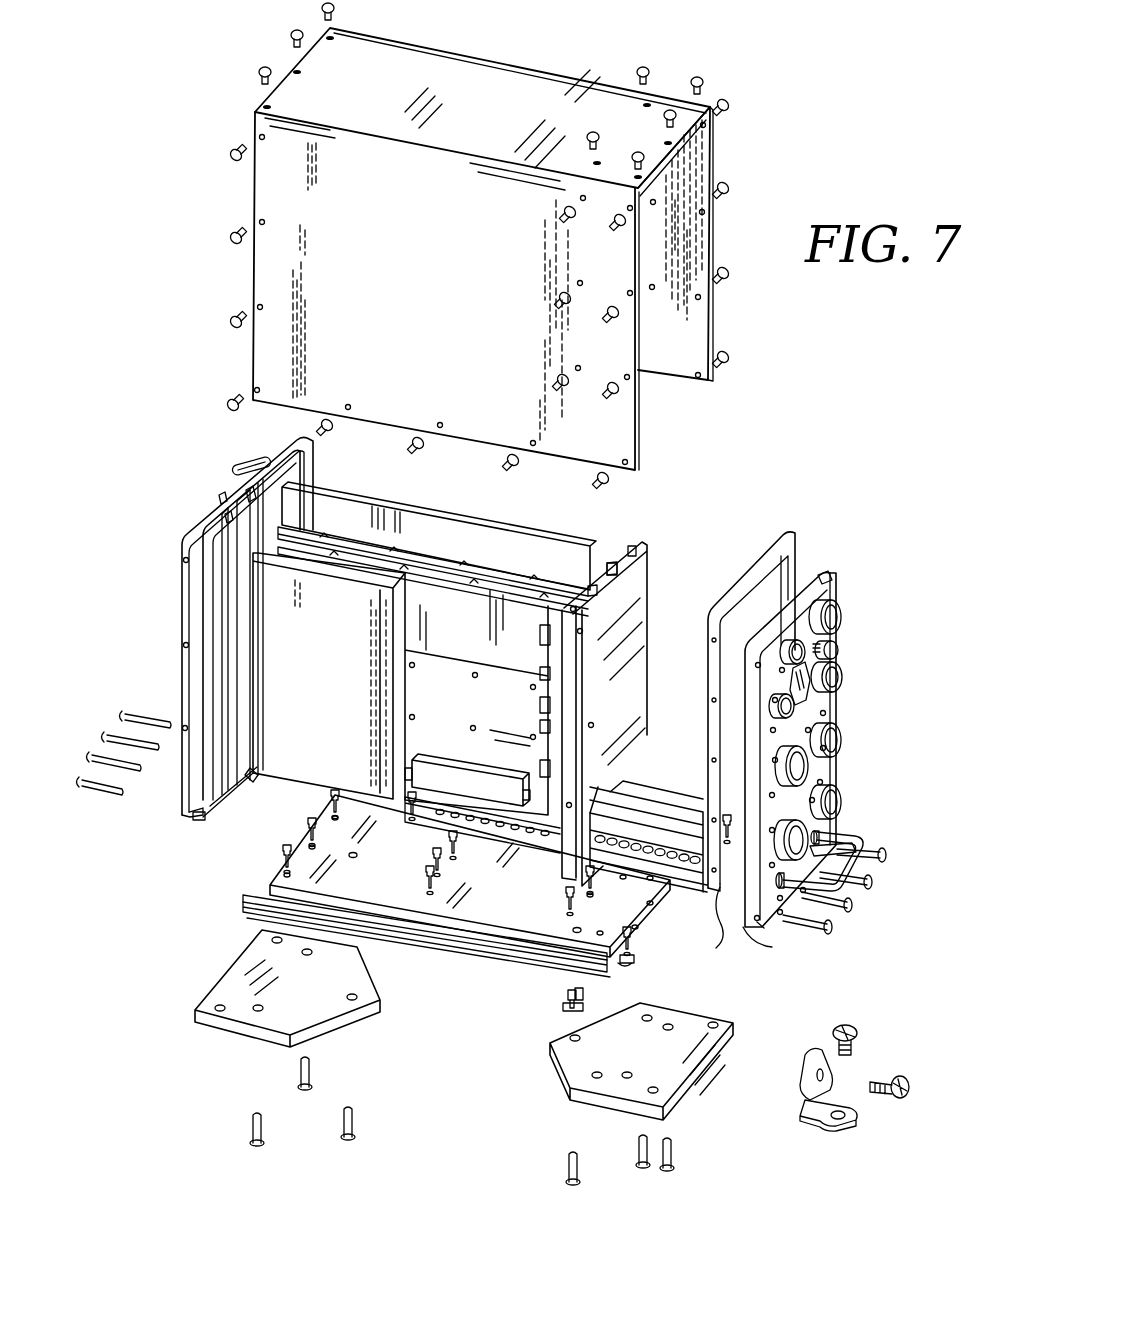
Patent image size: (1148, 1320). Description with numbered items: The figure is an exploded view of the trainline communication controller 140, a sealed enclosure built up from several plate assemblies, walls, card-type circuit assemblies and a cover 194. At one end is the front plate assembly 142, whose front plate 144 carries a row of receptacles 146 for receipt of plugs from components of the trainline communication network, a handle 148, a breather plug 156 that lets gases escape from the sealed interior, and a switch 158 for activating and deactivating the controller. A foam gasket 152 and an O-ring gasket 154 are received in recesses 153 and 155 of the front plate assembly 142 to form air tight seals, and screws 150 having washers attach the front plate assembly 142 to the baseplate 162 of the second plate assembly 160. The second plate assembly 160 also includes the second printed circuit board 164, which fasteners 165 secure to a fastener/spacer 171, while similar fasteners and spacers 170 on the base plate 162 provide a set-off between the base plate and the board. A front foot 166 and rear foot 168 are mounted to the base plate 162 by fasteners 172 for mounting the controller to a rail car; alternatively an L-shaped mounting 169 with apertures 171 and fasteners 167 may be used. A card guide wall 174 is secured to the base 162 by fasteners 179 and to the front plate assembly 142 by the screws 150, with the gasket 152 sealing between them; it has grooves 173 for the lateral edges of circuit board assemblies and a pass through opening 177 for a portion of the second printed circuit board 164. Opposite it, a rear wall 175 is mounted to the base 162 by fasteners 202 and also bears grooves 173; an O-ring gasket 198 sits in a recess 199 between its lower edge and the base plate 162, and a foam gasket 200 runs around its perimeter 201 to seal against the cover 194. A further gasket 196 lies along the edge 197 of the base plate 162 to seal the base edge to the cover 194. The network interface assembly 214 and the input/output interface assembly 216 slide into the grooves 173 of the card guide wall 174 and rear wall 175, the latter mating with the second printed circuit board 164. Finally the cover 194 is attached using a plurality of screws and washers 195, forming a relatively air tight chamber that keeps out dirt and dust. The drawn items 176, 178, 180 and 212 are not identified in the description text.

The trainline communication controller 140 is at (497, 247).
The front plate assembly 142 is at (809, 746).
The front plate 144 is at (818, 705).
The receptacles 146 is at (842, 604).
The handle 148 is at (852, 840).
The screws 150 is at (870, 850).
The foam gasket 152 is at (760, 580).
The recess 153 is at (823, 573).
The O-ring gasket 154 is at (720, 908).
The recess 155 is at (762, 926).
The breather plug 156 is at (842, 644).
The switch 158 is at (795, 680).
The second plate assembly 160 is at (697, 905).
The baseplate 162 is at (530, 917).
The second printed circuit board 164 is at (685, 782).
The fasteners 165 is at (412, 810).
The front foot 166 is at (640, 1062).
The fasteners 167 is at (862, 1038).
The rear foot 168 is at (340, 1002).
The L-shaped mounting 169 is at (789, 1072).
The fasteners and spacers 170 is at (310, 824).
The fastener/spacer 171 is at (836, 1116).
The fasteners 172 is at (590, 1130).
The grooves 173 is at (246, 490).
The card guide wall 174 is at (632, 719).
The rear wall 175 is at (182, 612).
The circuit board 176 is at (338, 650).
The pass through opening 177 is at (606, 800).
The circuit board 178 is at (342, 762).
The fasteners 179 is at (562, 1003).
The module 180 is at (492, 806).
The cover 194 is at (440, 349).
The screws and washers 195 is at (705, 83).
The gasket 196 is at (240, 906).
The edge 197 is at (262, 894).
The O-ring gasket 198 is at (247, 788).
The recess 199 is at (207, 820).
The foam gasket 200 is at (318, 452).
The perimeter 201 is at (262, 462).
The fasteners 202 is at (122, 700).
The top bracket 212 is at (576, 533).
The network interface assembly 214 is at (483, 565).
The input/output interface assembly 216 is at (433, 568).